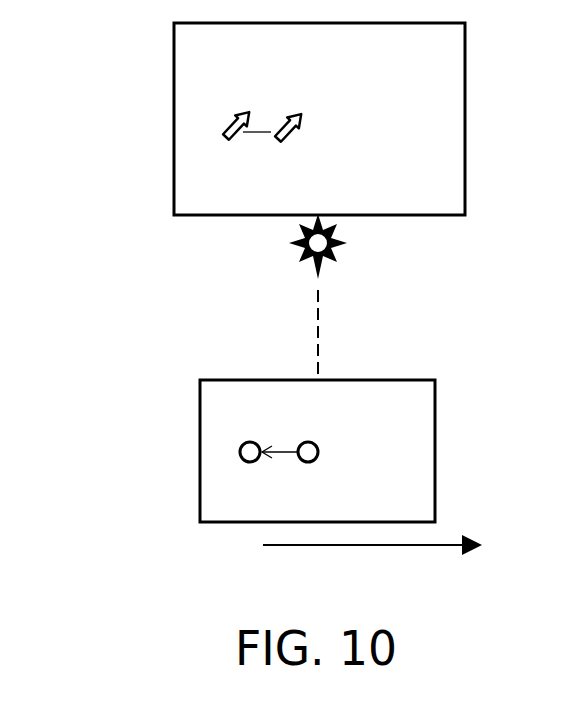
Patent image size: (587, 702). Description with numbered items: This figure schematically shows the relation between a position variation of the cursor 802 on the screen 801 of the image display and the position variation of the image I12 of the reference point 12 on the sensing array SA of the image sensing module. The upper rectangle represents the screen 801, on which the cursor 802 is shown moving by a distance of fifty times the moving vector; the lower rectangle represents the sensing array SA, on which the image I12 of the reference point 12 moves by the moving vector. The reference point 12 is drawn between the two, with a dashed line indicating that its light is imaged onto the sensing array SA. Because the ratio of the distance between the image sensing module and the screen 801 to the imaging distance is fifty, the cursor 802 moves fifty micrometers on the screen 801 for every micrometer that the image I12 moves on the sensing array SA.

The screen 801 is at (174, 195).
The cursor 802 is at (235, 131).
The reference point 12 is at (296, 245).
The sensing array SA is at (200, 452).
The image of the reference point I12 is at (242, 454).